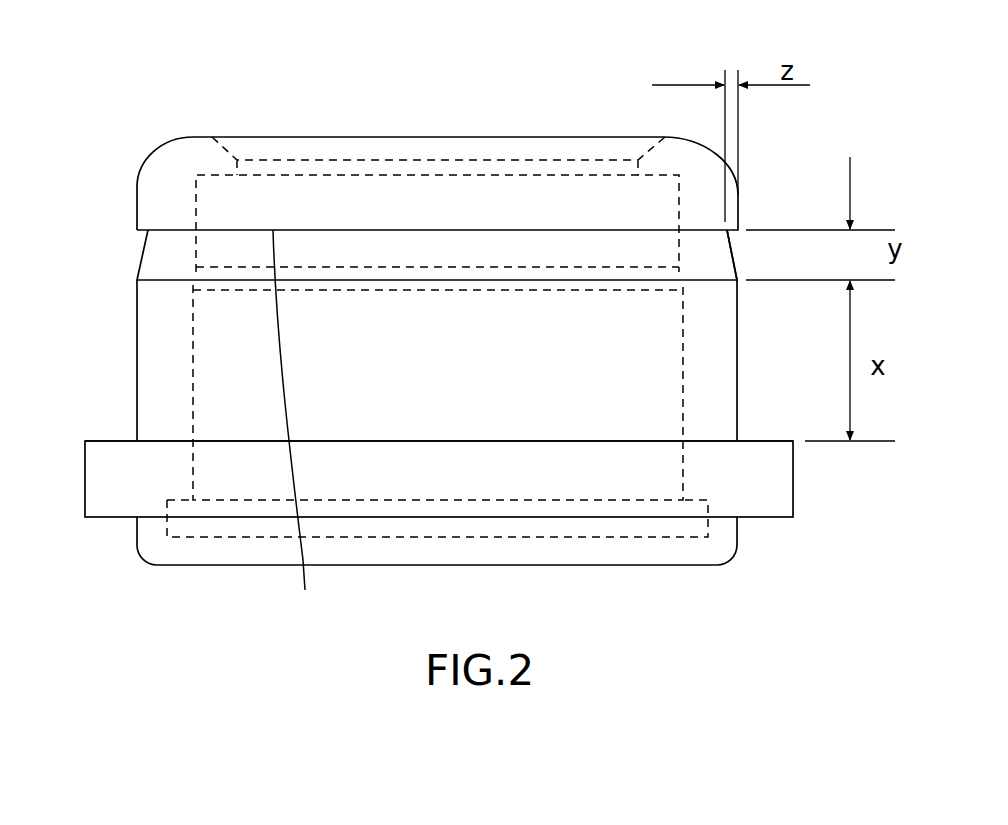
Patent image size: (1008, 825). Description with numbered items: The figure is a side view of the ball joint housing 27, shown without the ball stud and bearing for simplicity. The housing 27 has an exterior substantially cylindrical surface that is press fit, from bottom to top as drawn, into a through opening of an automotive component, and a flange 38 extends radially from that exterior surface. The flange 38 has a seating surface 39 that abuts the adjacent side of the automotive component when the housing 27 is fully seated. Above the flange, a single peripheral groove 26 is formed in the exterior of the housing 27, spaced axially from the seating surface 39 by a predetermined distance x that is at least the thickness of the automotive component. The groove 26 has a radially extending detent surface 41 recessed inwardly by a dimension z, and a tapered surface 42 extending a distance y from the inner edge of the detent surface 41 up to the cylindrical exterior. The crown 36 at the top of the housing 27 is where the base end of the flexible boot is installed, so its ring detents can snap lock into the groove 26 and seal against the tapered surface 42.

The peripheral groove 26 is at (128, 258).
The ball joint housing 27 is at (137, 357).
The crown 36 is at (158, 153).
The flange 38 is at (85, 492).
The seating surface 39 is at (117, 441).
The detent surface 41 is at (295, 428).
The tapered surface 42 is at (737, 268).